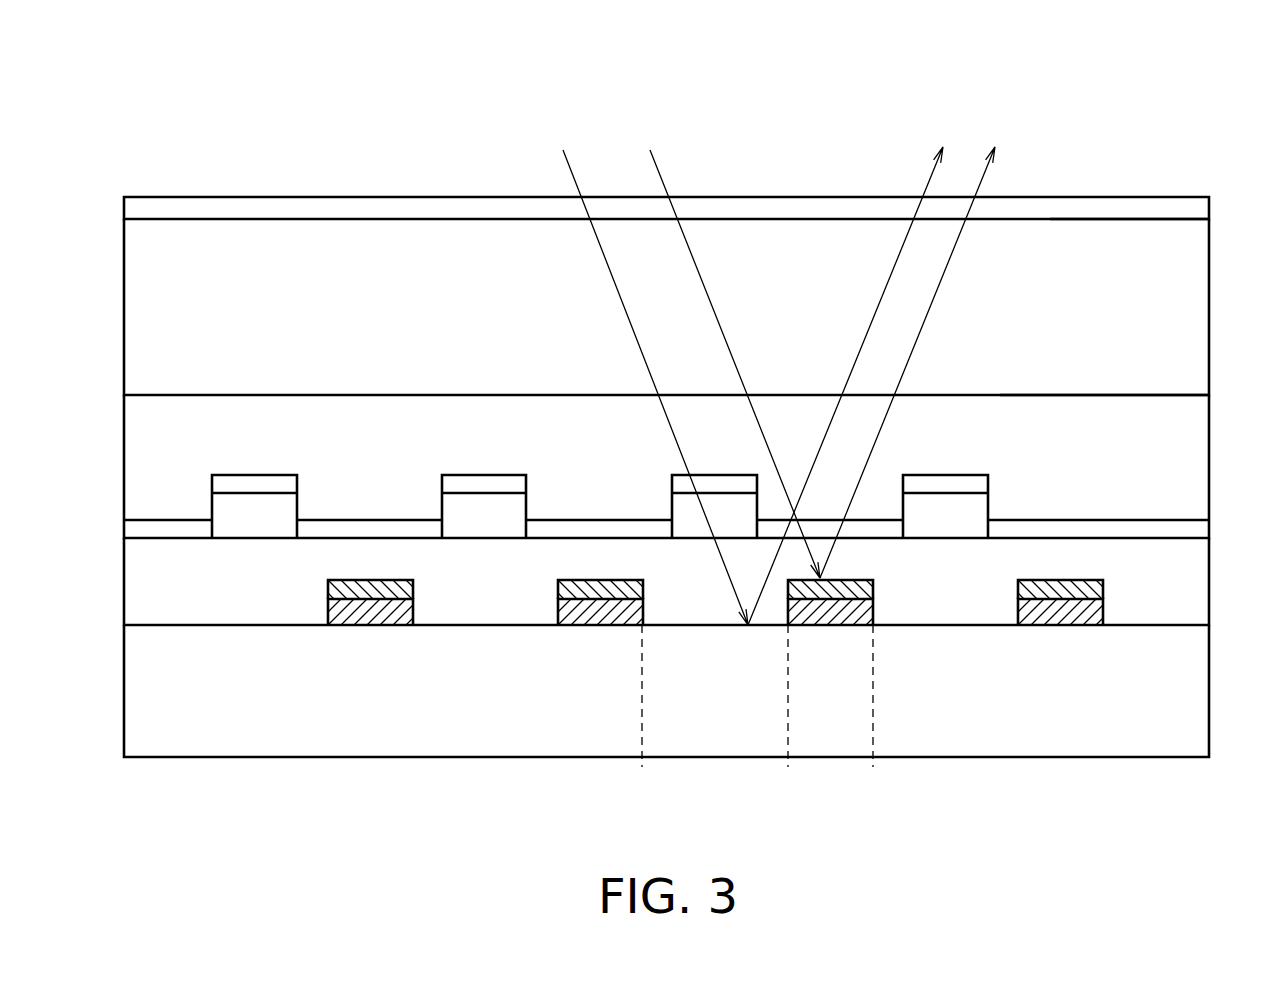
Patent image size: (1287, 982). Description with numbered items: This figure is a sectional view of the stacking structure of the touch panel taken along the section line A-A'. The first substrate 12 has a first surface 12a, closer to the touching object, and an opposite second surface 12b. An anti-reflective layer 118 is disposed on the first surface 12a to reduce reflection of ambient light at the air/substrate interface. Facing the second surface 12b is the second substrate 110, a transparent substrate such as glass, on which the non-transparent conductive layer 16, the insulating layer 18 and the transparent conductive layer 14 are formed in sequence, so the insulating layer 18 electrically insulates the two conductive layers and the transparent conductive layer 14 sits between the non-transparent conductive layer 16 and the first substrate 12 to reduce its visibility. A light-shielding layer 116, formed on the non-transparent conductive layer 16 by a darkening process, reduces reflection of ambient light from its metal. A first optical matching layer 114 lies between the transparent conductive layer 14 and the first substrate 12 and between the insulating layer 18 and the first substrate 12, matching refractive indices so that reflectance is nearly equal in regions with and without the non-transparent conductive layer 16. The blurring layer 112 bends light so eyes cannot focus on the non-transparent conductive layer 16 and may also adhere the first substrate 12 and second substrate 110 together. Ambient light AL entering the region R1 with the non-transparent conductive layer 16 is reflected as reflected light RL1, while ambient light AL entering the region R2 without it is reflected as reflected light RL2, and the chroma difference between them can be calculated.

The second substrate 110 is at (1200, 688).
The insulating layer 18 is at (1200, 554).
The non-transparent conductive layer 16 is at (1118, 609).
The light-shielding layer 116 is at (1097, 592).
The transparent conductive layer 14 is at (1002, 500).
The first optical matching layer 114 is at (977, 485).
The blurring layer 112 is at (1200, 428).
The first substrate 12 is at (1200, 312).
The first surface 12a is at (1138, 218).
The second surface 12b is at (1106, 394).
The anti-reflective layer 118 is at (1200, 208).
The ambient light AL is at (573, 174).
The reflected light RL1 is at (977, 190).
The reflected light RL2 is at (924, 192).
The region R1 is at (873, 773).
The region R2 is at (788, 773).
The section line A is at (662, 26).